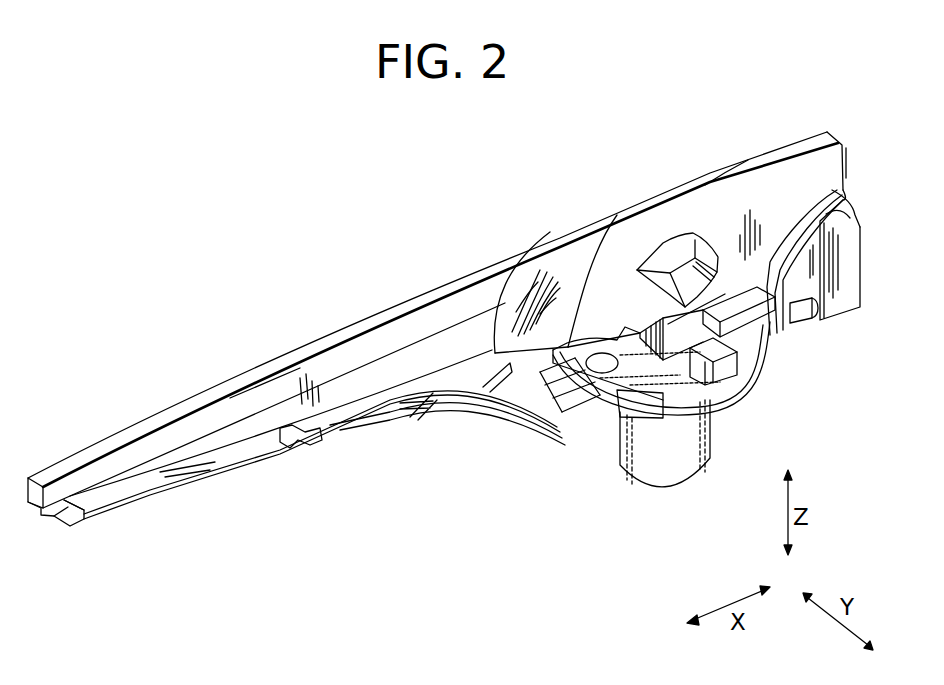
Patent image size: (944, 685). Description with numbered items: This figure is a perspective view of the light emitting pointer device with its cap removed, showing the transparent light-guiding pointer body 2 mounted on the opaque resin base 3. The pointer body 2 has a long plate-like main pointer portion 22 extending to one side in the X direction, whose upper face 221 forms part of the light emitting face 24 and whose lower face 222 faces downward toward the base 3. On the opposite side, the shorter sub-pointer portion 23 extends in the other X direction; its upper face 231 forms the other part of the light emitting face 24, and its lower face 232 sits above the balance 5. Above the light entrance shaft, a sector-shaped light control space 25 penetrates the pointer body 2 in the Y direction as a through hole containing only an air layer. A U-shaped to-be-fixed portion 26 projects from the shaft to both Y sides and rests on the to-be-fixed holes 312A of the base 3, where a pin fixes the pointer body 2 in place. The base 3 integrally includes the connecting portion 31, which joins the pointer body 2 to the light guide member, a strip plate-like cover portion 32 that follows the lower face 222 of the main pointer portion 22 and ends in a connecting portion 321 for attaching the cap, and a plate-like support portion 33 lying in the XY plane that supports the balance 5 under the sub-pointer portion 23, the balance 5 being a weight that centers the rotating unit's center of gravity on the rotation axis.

The pointer body 2 is at (805, 180).
The main pointer portion 22 is at (432, 325).
The upper face 221 is at (287, 357).
The lower face 222 is at (393, 402).
The sub-pointer portion 23 is at (836, 162).
The upper face 231 is at (748, 160).
The lower face 232 is at (853, 223).
The light emitting face 24 is at (558, 230).
The light control space 25 is at (668, 252).
The to-be-fixed portion 26 is at (780, 347).
The base 3 is at (550, 409).
The connecting portion 31 is at (697, 440).
The to-be-fixed hole 312A is at (730, 389).
The cover portion 32 is at (477, 405).
The connecting portion 321 is at (53, 517).
The support portion 33 is at (795, 322).
The balance 5 is at (837, 253).